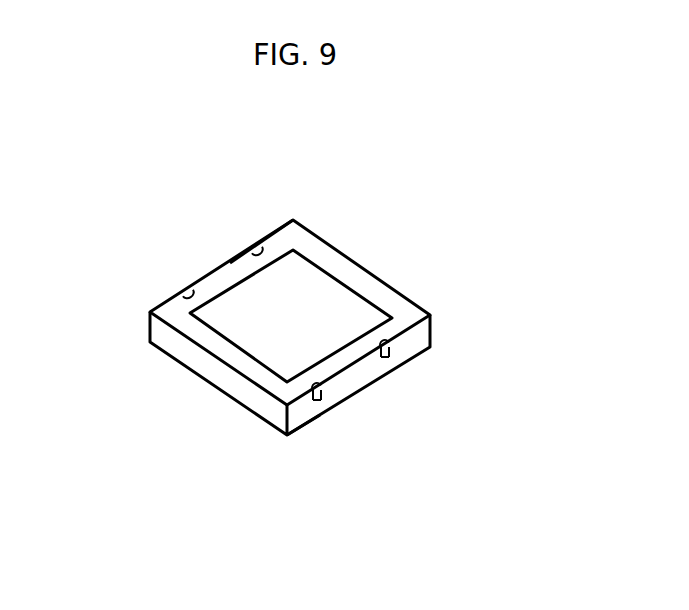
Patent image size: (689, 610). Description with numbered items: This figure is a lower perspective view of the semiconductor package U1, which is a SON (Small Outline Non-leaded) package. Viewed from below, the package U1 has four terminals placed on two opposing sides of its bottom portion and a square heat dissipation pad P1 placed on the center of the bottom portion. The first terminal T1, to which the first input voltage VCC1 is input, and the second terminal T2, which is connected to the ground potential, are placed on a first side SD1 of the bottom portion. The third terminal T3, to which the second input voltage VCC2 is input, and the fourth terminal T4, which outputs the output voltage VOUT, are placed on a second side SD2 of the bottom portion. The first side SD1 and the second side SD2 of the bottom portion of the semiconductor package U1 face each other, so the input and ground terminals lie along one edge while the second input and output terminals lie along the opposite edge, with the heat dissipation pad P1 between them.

The semiconductor package U1 is at (264, 107).
The heat dissipation pad P1 is at (348, 286).
The first side SD1 is at (300, 406).
The second side SD2 is at (276, 221).
The first terminal T1 is at (389, 355).
The second terminal T2 is at (320, 398).
The third terminal T3 is at (187, 291).
The fourth terminal T4 is at (256, 247).